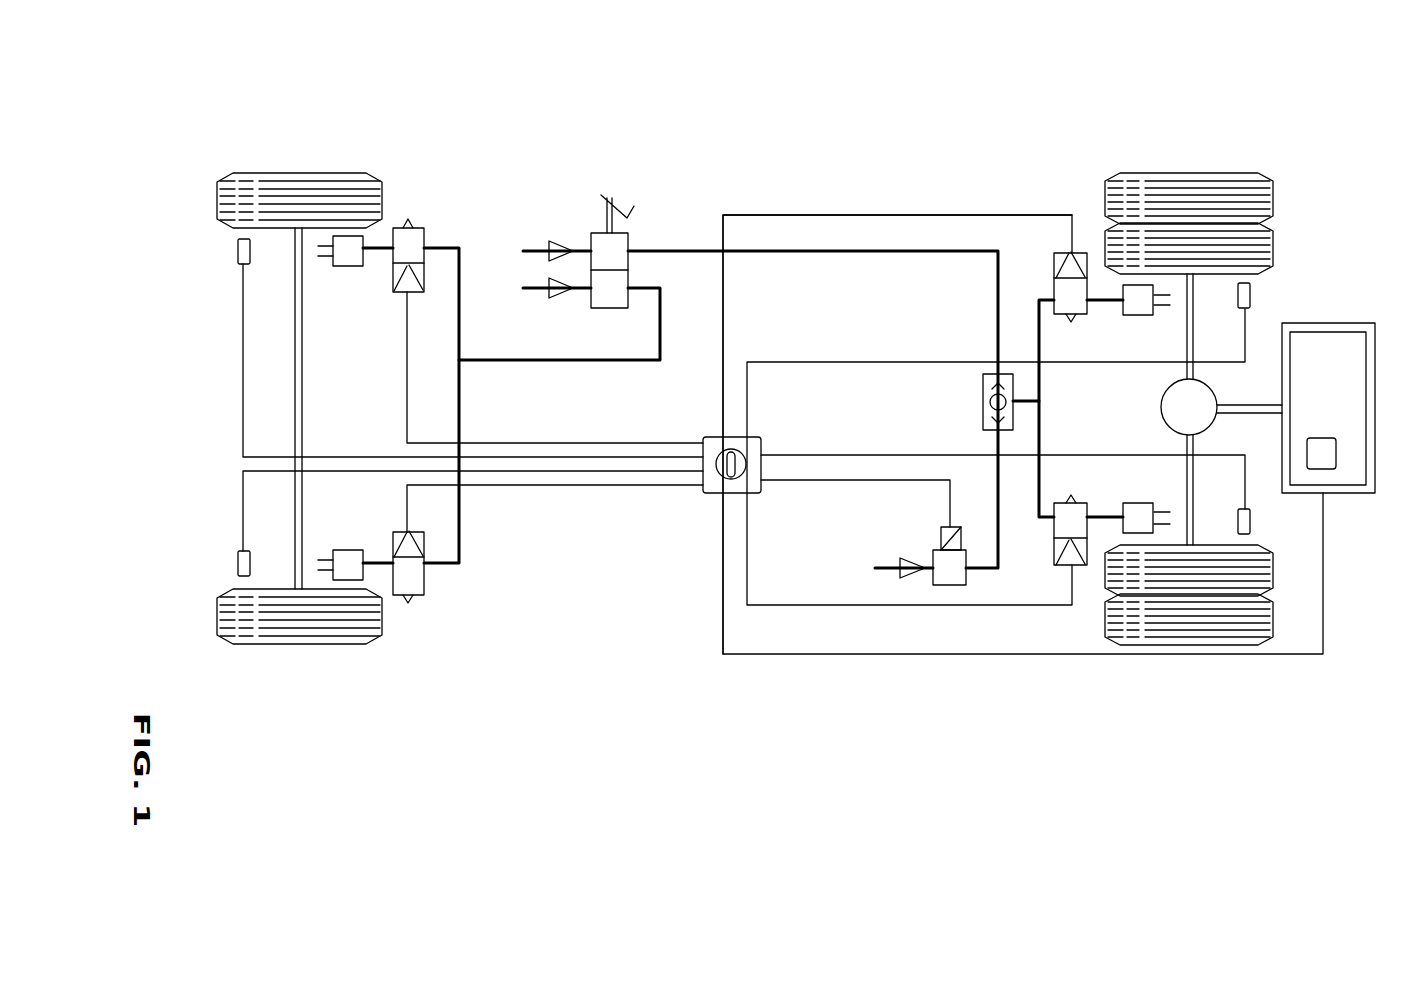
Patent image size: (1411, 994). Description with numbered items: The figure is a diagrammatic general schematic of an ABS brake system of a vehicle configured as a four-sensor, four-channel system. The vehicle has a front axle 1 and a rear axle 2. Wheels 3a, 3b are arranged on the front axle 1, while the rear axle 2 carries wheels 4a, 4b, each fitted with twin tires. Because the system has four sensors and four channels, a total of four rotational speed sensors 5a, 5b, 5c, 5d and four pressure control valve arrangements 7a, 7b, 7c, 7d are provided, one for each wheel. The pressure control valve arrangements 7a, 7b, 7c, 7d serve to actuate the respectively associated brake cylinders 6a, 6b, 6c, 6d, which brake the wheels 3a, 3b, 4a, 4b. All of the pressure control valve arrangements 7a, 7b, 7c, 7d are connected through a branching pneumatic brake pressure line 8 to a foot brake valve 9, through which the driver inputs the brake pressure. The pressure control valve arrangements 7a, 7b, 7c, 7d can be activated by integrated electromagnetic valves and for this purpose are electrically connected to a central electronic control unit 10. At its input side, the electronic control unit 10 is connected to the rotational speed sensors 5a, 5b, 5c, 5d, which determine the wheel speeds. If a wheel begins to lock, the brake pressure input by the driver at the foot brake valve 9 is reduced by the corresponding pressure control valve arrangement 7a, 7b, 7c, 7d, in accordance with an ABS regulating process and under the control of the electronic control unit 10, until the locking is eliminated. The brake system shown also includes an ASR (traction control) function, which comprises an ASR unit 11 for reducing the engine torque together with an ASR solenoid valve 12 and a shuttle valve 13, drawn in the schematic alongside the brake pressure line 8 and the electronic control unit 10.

The front axle 1 is at (300, 150).
The rear axle 2 is at (1196, 152).
The wheel 3a is at (217, 197).
The wheel 3b is at (217, 612).
The wheel 4a is at (1273, 200).
The wheel 4b is at (1273, 620).
The rotational speed sensor 5a is at (238, 250).
The rotational speed sensor 5b is at (238, 564).
The rotational speed sensor 5c is at (1251, 297).
The rotational speed sensor 5d is at (1251, 520).
The brake cylinder 6a is at (348, 266).
The brake cylinder 6b is at (348, 552).
The brake cylinder 6c is at (1140, 318).
The brake cylinder 6d is at (1137, 505).
The pressure control valve arrangement 7a is at (420, 262).
The pressure control valve arrangement 7b is at (420, 596).
The pressure control valve arrangement 7c is at (1083, 320).
The pressure control valve arrangement 7d is at (1065, 520).
The pneumatic brake pressure line 8 is at (790, 249).
The foot brake valve 9 is at (591, 242).
The electronic control unit 10 is at (723, 492).
The ASR unit 11 is at (1347, 370).
The ASR solenoid valve 12 is at (933, 568).
The shuttle valve 13 is at (983, 402).